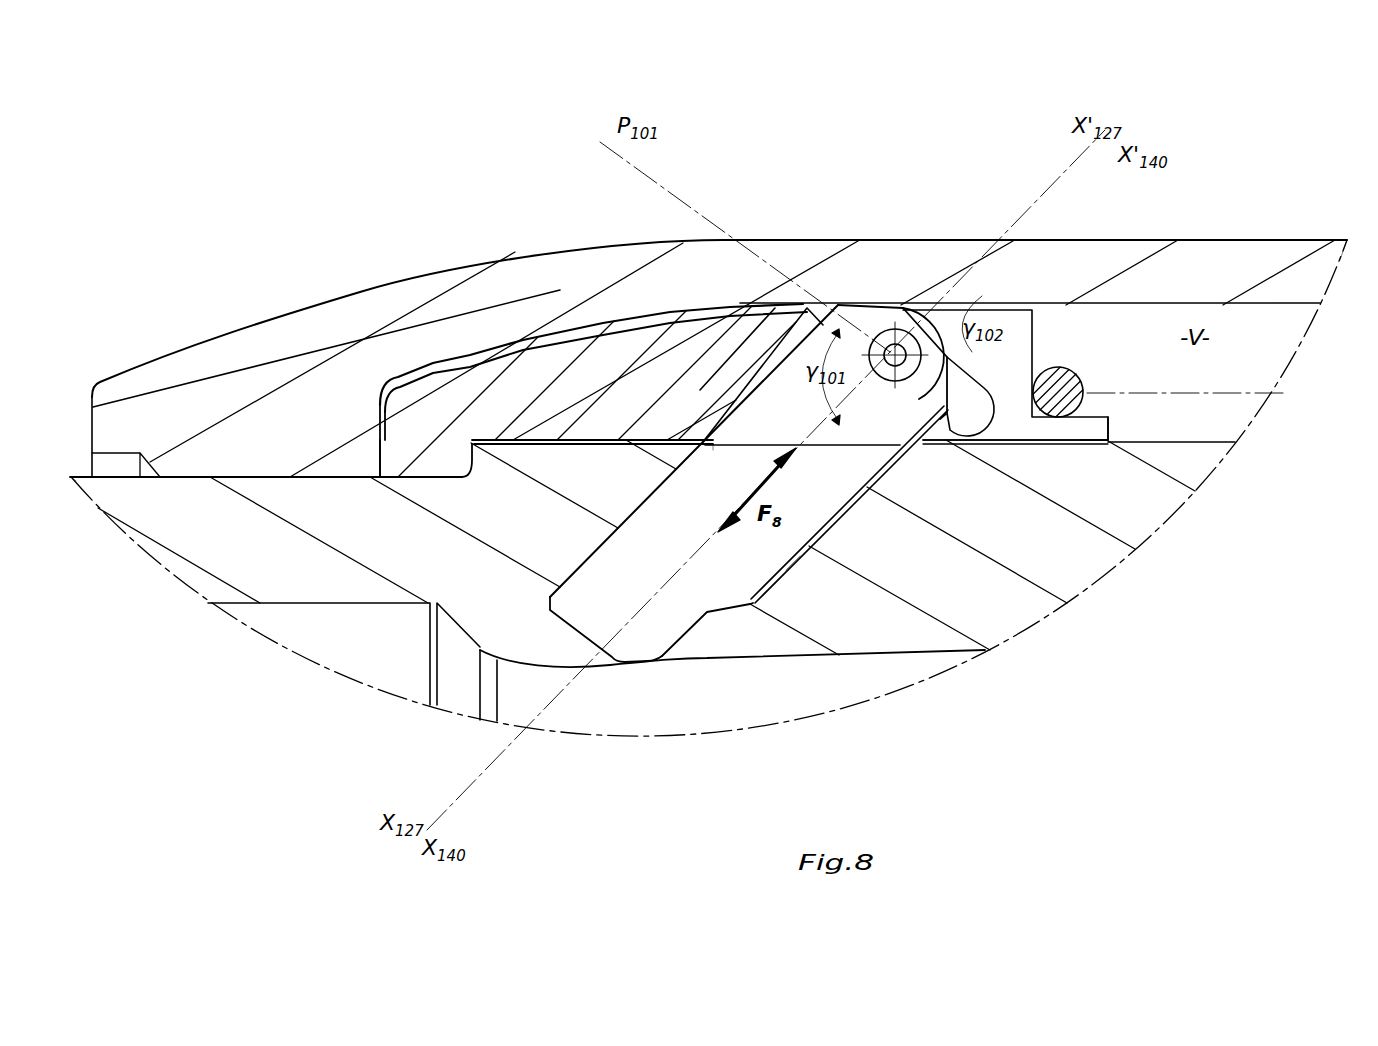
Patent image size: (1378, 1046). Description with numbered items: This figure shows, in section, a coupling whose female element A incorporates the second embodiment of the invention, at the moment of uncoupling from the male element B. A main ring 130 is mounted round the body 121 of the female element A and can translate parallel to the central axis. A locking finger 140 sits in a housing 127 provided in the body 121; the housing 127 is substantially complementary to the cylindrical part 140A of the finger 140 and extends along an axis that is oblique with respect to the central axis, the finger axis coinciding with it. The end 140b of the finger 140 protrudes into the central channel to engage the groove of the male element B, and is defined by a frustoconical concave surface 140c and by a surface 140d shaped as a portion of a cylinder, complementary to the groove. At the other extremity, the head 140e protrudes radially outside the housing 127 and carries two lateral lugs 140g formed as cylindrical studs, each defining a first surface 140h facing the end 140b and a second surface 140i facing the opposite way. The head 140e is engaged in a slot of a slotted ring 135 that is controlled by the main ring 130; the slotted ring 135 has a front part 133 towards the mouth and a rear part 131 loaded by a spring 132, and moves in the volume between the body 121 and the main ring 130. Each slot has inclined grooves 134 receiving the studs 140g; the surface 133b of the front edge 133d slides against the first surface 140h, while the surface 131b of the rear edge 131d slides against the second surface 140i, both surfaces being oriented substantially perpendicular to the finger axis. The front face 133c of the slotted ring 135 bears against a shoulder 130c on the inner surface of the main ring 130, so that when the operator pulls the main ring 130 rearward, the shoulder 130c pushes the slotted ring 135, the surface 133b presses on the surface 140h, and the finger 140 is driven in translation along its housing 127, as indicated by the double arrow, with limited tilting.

The main ring 130 is at (1255, 257).
The shoulder 130c is at (372, 394).
The rear part 131 is at (1023, 327).
The surface of the rear edge 131b is at (1020, 370).
The rear edge 131d is at (996, 398).
The spring 132 is at (1240, 395).
The front part 133 is at (525, 375).
The surface of the front edge 133b is at (912, 452).
The front face 133c is at (380, 442).
The front edge 133d is at (962, 447).
The inclined groove 134 is at (1065, 535).
The slotted ring 135 is at (1114, 436).
The locking finger 140 is at (740, 420).
The cylindrical part 140A is at (815, 510).
The end 140b is at (583, 595).
The frustoconical concave surface 140c is at (690, 637).
The cylinder-portion surface 140d is at (650, 664).
The head 140e is at (887, 305).
The lateral lug 140g is at (905, 308).
The first surface 140h is at (862, 322).
The second surface 140i is at (940, 310).
The body 121 is at (1065, 578).
The housing 127 is at (828, 650).
The female element A is at (1203, 232).
The male element B is at (284, 651).